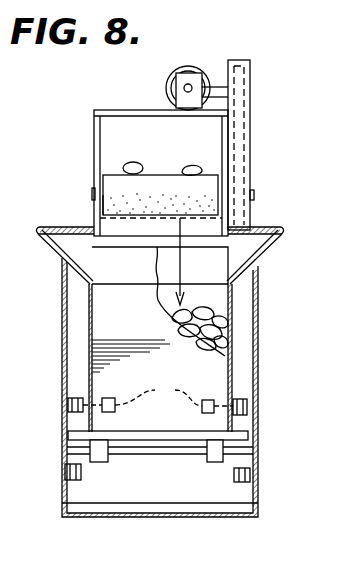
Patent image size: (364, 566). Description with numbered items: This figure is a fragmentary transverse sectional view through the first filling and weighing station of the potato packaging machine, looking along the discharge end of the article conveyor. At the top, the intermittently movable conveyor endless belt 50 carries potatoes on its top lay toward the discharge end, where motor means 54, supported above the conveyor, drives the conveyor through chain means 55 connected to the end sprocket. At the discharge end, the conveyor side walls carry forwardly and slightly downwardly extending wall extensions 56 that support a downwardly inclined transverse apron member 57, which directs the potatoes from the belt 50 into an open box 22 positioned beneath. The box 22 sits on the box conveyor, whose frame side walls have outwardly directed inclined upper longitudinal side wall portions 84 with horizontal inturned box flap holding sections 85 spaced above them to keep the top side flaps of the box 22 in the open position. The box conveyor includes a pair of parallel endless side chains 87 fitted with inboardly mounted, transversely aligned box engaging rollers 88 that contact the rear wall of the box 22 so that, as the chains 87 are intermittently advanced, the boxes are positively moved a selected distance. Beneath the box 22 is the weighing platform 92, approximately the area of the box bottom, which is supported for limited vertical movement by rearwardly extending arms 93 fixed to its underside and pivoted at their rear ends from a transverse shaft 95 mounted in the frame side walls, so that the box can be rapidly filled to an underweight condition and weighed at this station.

The open box 22 is at (160, 339).
The conveyor endless belt 50 is at (163, 178).
The motor means 54 is at (196, 67).
The chain means 55 is at (252, 92).
The wall extensions 56 is at (105, 207).
The transverse apron member 57 is at (112, 228).
The inclined upper longitudinal side wall portions 84 is at (272, 258).
The box flap holding sections 85 is at (285, 243).
The endless side chains 87 is at (64, 472).
The box engaging rollers 88 is at (157, 398).
The weighing platform 92 is at (155, 440).
The arms 93 is at (99, 462).
The transverse shaft 95 is at (197, 462).